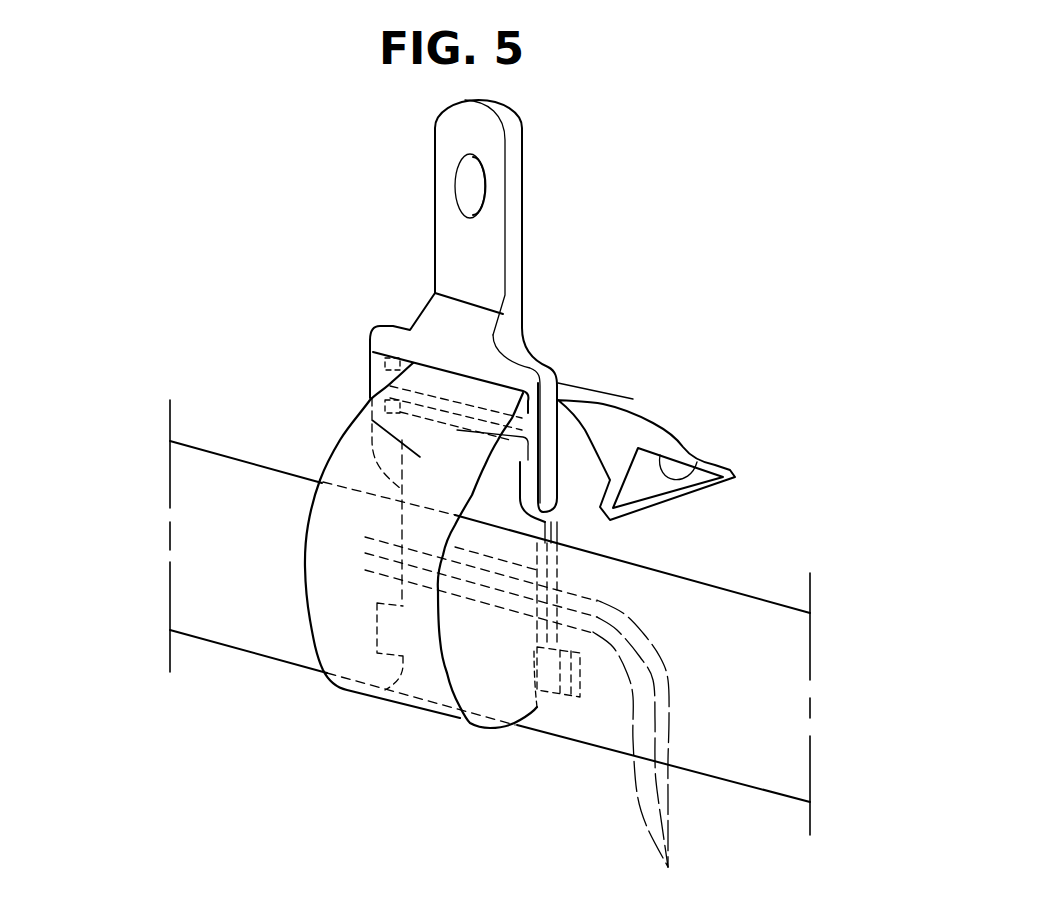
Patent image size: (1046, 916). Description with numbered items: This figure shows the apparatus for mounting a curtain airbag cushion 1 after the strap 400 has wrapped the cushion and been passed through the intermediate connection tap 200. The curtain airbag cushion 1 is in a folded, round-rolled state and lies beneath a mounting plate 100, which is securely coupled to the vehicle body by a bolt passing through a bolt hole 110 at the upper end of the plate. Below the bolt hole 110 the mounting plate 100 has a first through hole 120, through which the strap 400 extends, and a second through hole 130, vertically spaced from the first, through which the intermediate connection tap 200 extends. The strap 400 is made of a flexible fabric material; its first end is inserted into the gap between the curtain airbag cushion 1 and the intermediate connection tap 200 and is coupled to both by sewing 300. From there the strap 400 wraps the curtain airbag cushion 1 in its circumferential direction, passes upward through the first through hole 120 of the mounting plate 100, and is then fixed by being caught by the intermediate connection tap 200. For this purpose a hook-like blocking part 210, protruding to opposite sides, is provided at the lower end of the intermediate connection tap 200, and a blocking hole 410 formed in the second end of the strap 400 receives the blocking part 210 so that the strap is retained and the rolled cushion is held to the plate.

The curtain airbag cushion 1 is at (207, 557).
The mounting plate 100 is at (515, 240).
The bolt hole 110 is at (470, 187).
The first through hole 120 is at (373, 352).
The second through hole 130 is at (370, 397).
The intermediate connection tap 200 is at (337, 413).
The blocking part 210 is at (387, 630).
The sewing 300 is at (644, 751).
The strap 400 is at (637, 400).
The blocking hole 410 is at (697, 467).